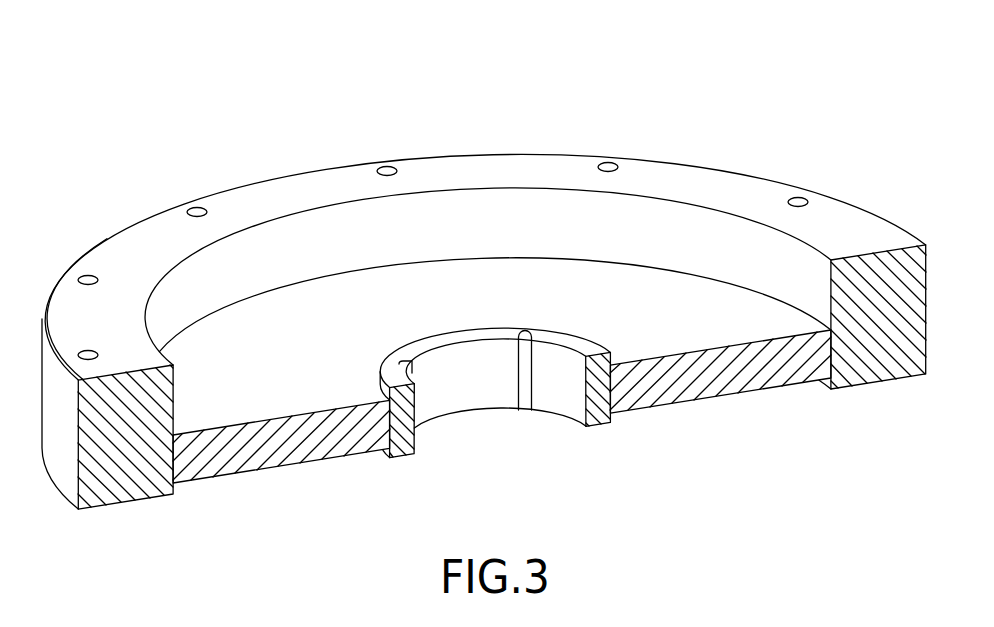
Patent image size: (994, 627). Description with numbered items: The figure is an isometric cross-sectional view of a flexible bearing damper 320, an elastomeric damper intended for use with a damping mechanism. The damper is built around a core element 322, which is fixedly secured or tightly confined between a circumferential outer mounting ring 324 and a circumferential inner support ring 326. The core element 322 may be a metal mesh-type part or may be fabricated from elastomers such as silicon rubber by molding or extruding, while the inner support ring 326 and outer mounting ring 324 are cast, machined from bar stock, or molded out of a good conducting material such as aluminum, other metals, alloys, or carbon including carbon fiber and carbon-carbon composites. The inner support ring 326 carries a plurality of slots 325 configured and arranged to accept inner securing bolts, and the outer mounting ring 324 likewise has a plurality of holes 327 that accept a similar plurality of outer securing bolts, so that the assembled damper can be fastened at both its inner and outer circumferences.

The flexible bearing damper 320 is at (679, 71).
The core element 322 is at (358, 330).
The circumferential outer mounting ring 324 is at (339, 176).
The slots 325 is at (525, 399).
The circumferential inner support ring 326 is at (405, 455).
The holes 327 is at (197, 207).